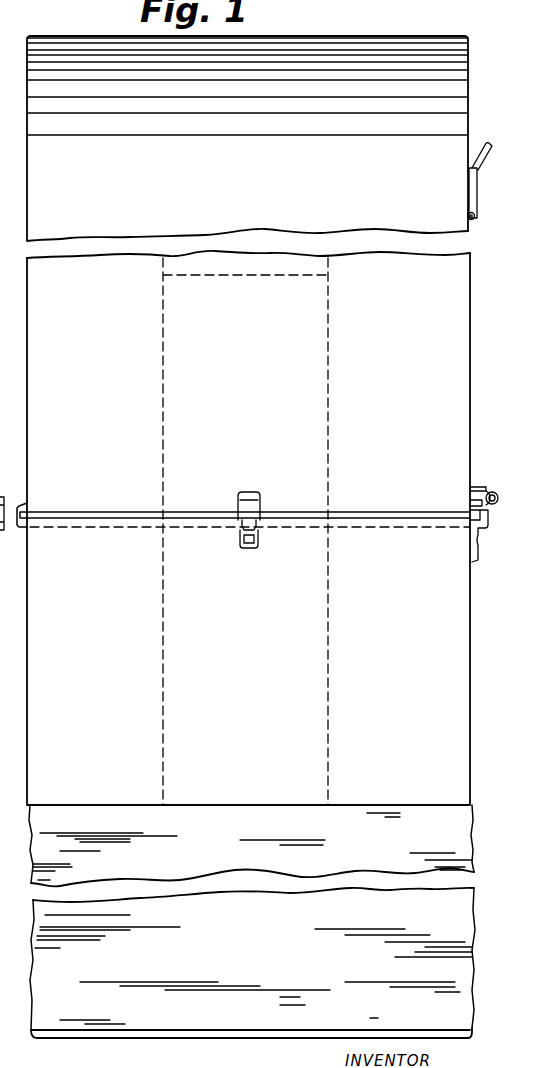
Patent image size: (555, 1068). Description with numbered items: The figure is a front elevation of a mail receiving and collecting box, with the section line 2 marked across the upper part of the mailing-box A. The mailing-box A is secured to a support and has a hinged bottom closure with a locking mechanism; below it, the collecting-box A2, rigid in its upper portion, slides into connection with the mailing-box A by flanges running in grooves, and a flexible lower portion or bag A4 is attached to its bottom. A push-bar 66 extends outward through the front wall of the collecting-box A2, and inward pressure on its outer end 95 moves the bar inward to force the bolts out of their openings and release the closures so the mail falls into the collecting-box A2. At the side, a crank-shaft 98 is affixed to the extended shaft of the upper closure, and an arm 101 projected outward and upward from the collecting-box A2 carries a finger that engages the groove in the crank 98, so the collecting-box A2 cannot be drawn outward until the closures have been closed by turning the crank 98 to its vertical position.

The lid section line 2 is at (77, 72).
The outer end of the push-bar 95 is at (262, 505).
The push-bar 66 is at (258, 538).
The crank-shaft 98 is at (480, 483).
The arm 101 is at (484, 540).
The mailing-box A is at (248, 528).
The collecting-box A2 is at (250, 603).
The flexible lower portion or bag A4 is at (252, 963).